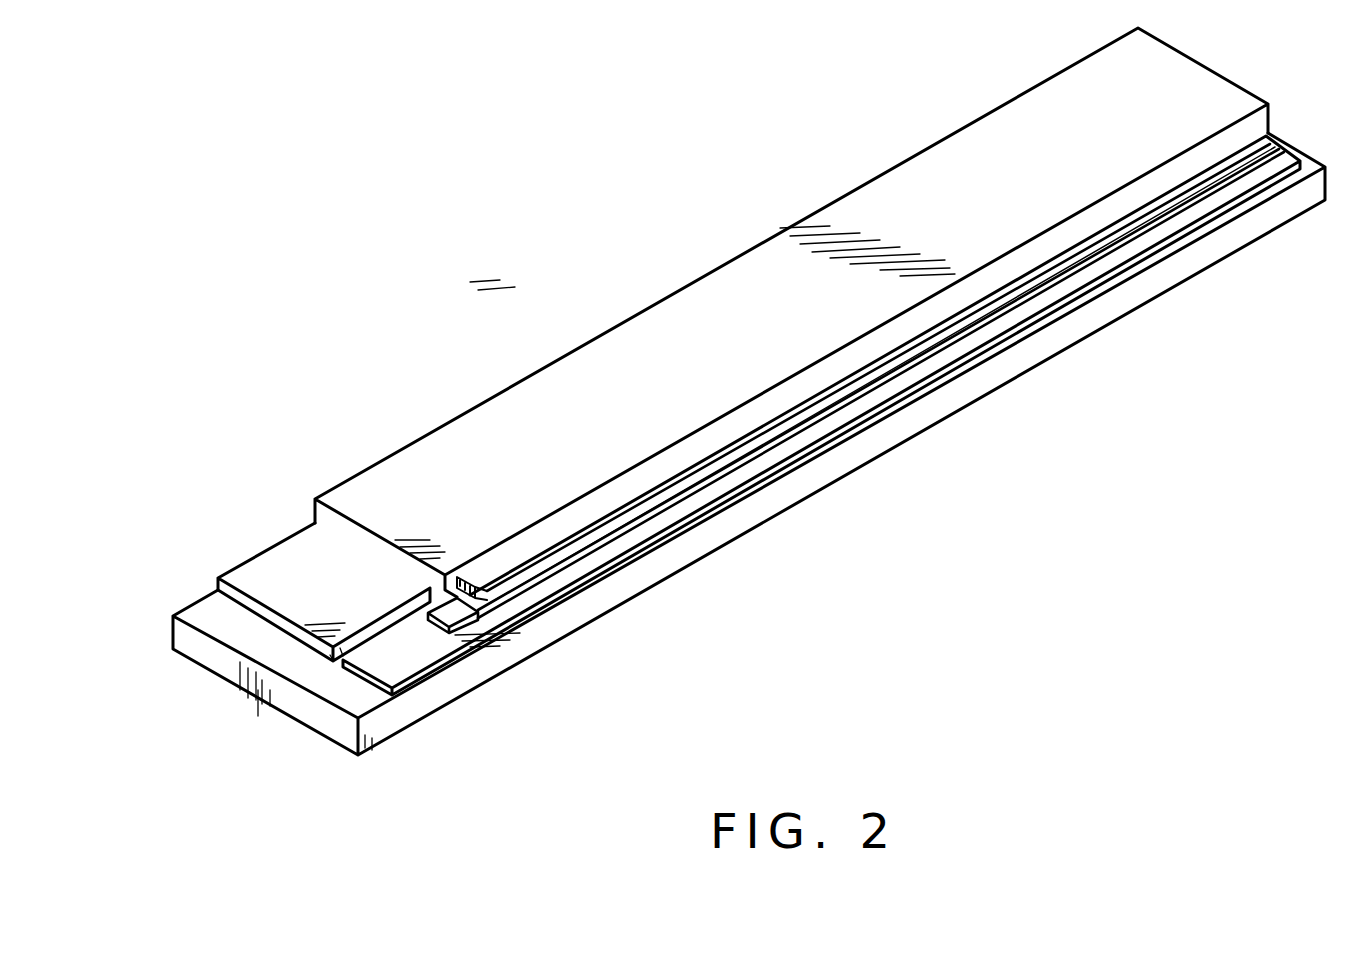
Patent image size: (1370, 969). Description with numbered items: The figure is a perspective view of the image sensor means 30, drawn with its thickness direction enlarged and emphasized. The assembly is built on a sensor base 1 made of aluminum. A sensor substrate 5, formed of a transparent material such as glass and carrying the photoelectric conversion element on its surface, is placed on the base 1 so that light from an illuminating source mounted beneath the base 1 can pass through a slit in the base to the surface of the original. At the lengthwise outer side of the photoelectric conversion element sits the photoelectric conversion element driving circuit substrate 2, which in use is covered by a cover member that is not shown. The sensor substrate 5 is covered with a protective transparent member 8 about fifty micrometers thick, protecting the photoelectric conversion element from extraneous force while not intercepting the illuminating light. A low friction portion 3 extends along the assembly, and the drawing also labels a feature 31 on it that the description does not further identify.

The sensor base 1 is at (716, 290).
The photoelectric conversion element driving circuit substrate 2 is at (296, 565).
The low friction portion 3 is at (1223, 147).
The optical fibers 31 is at (1138, 197).
The sensor substrate 5 is at (413, 643).
The protective transparent member 8 is at (470, 608).
The image sensor means 30 is at (910, 464).